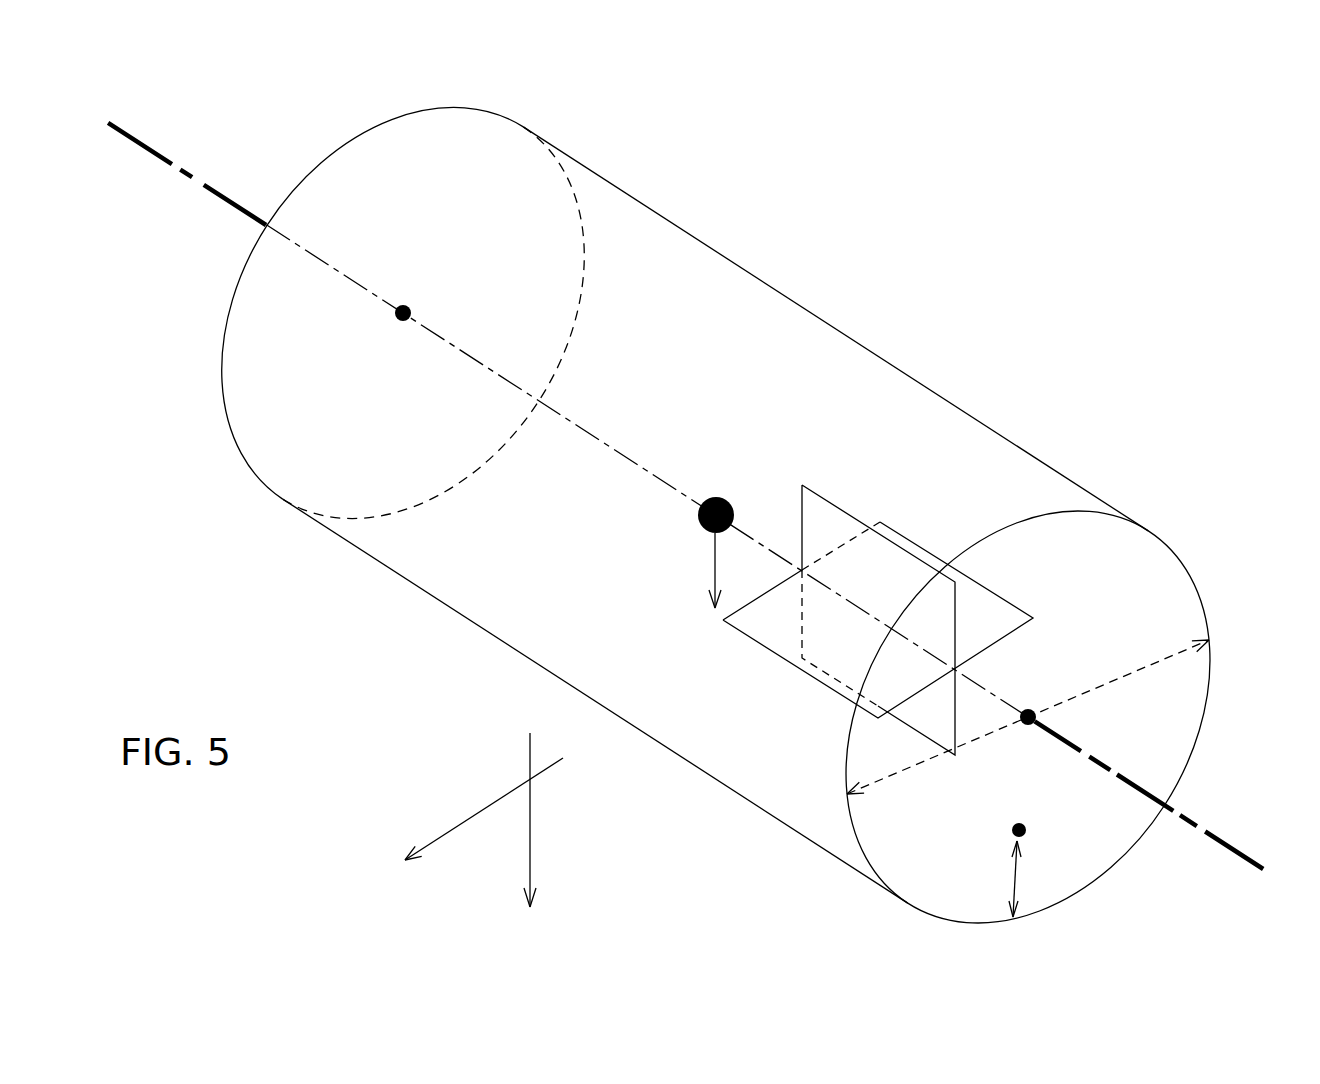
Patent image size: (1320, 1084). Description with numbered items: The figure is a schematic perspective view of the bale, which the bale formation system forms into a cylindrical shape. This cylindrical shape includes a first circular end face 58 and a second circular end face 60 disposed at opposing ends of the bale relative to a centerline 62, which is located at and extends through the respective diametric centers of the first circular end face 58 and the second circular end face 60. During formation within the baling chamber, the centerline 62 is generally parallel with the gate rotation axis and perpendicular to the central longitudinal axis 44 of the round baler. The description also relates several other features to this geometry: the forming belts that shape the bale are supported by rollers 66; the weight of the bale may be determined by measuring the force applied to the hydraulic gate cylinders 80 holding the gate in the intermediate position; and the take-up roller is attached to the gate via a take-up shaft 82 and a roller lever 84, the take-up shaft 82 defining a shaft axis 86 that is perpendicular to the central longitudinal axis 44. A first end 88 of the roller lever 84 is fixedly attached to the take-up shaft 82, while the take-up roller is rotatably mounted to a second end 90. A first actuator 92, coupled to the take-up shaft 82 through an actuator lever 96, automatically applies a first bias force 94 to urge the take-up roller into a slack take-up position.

The central longitudinal axis 44 is at (906, 273).
The first circular end face 58 is at (1163, 705).
The second circular end face 60 is at (382, 208).
The centerline 62 is at (1230, 838).
The rollers 66 is at (1123, 674).
The hydraulic gate cylinders 80 is at (1027, 825).
The take-up shaft 82 is at (714, 565).
The roller lever 84 is at (716, 497).
The shaft axis 86 is at (956, 617).
The first end 88 is at (532, 832).
The second end 90 is at (1014, 878).
The first actuator 92 is at (1108, 873).
The first bias force 94 is at (808, 676).
The actuator lever 96 is at (477, 808).